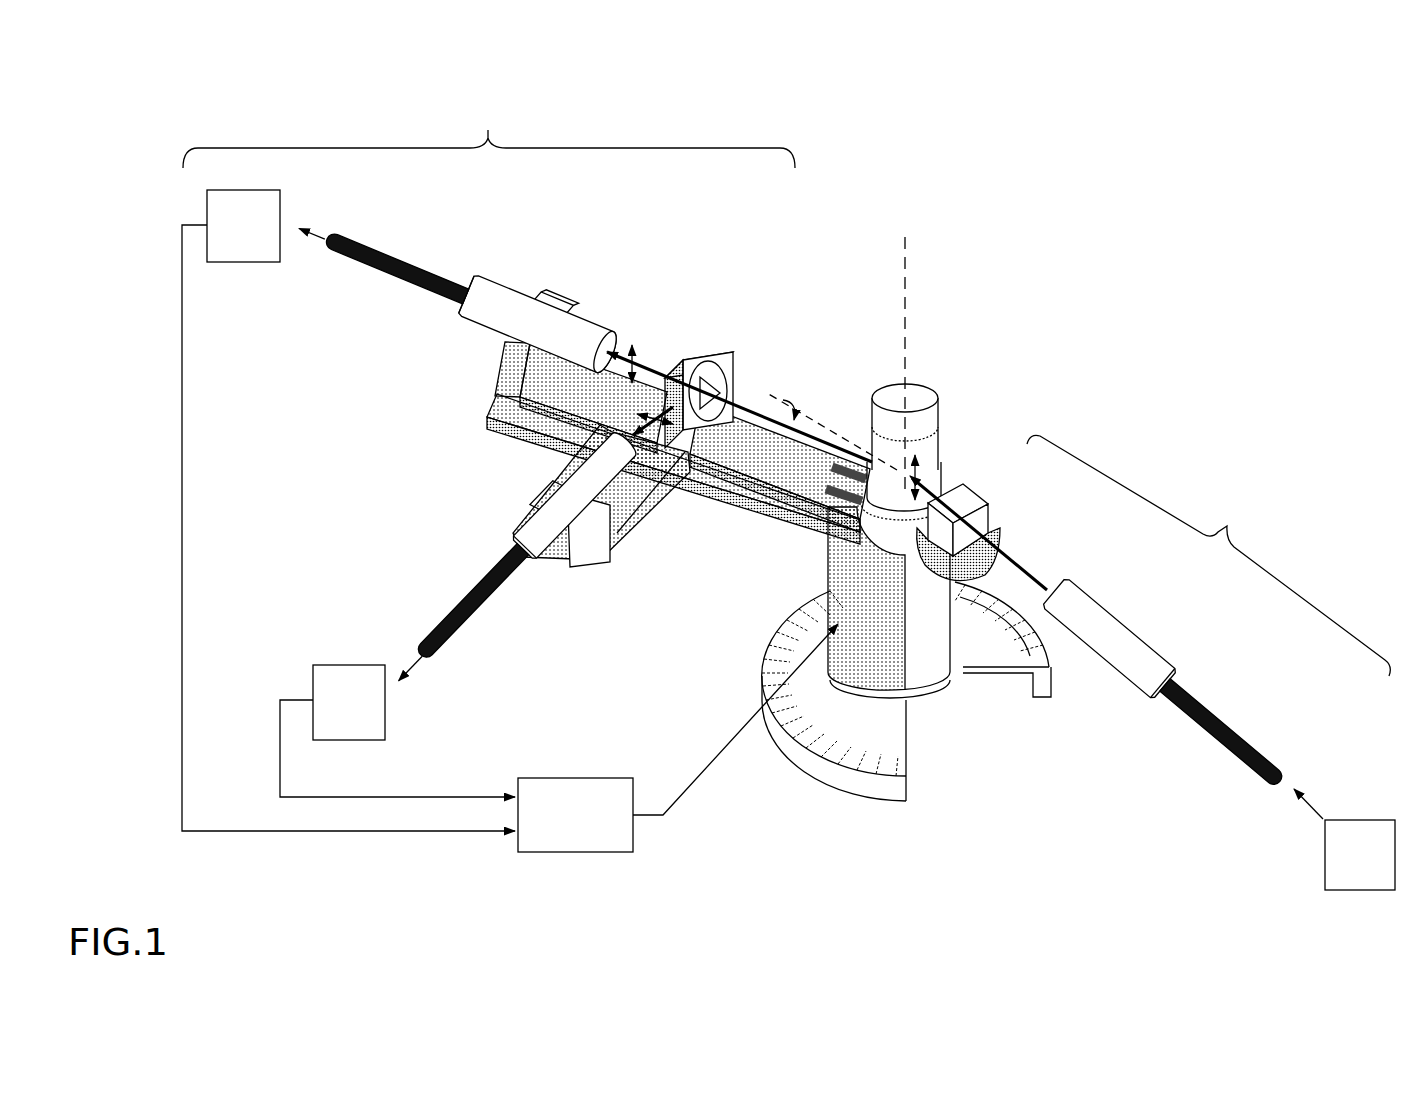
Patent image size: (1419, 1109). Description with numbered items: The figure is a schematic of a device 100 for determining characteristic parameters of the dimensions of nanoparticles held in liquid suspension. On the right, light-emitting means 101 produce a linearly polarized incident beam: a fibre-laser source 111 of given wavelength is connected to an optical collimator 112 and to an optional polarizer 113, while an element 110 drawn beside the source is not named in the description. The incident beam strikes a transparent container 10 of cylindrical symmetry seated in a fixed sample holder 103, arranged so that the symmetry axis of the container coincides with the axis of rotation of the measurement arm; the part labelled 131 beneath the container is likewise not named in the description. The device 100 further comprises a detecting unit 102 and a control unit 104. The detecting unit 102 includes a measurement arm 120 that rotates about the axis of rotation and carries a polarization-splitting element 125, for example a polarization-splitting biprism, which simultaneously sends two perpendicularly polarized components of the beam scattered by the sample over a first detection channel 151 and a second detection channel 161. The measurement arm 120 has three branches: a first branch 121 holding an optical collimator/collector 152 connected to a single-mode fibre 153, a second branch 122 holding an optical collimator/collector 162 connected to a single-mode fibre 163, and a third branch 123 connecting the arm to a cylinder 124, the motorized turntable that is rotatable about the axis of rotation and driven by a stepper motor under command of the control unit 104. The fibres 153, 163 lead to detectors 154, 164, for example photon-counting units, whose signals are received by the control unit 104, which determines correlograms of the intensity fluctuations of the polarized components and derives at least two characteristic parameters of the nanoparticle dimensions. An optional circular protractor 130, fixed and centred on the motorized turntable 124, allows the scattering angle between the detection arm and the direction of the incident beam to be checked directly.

The device for determining characteristic parameters of the dimensions of nanopartic 100 is at (1080, 178).
The transparent container 10 is at (930, 433).
The light-emitting means 101 is at (1208, 615).
The detecting unit 102 is at (490, 126).
The sample holder 103 is at (937, 665).
The control unit 104 is at (581, 837).
The light source 110 is at (1325, 866).
The fibre-laser source 111 is at (1222, 733).
The optical collimator 112 is at (1110, 638).
The polarizer 113 is at (980, 520).
The measurement arm 120 is at (666, 428).
The first branch 121 is at (567, 398).
The second branch 122 is at (643, 520).
The third branch 123 is at (787, 473).
The motorized turntable 124 is at (823, 583).
The polarization-splitting element 125 is at (692, 358).
The circular protractor 130 is at (1010, 650).
The sample holder ring 131 is at (829, 522).
The first detection channel 151 is at (459, 284).
The optical collimator/collector 152 is at (542, 318).
The single-mode fibre 153 is at (383, 250).
The detector 154 is at (262, 207).
The second detection channel 161 is at (493, 556).
The optical collimator/collector 162 is at (571, 491).
The single-mode fibre 163 is at (472, 602).
The detector 164 is at (342, 675).